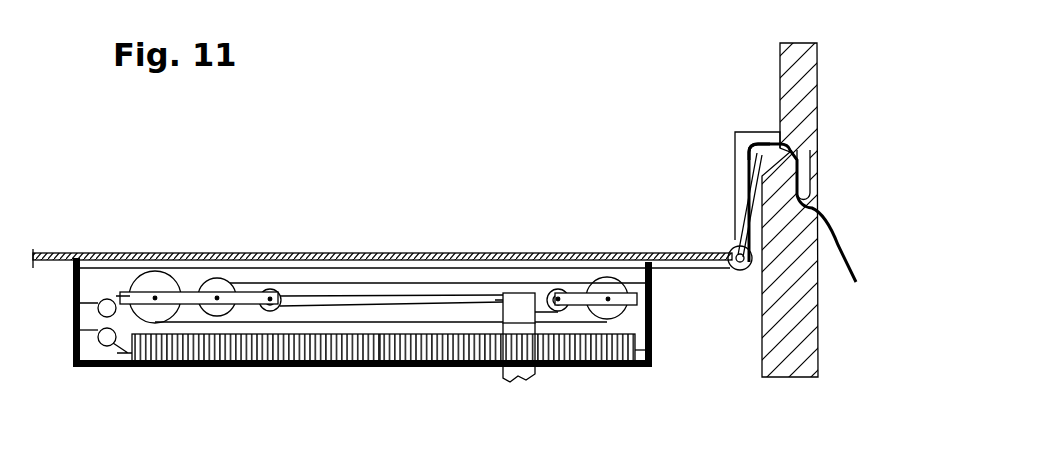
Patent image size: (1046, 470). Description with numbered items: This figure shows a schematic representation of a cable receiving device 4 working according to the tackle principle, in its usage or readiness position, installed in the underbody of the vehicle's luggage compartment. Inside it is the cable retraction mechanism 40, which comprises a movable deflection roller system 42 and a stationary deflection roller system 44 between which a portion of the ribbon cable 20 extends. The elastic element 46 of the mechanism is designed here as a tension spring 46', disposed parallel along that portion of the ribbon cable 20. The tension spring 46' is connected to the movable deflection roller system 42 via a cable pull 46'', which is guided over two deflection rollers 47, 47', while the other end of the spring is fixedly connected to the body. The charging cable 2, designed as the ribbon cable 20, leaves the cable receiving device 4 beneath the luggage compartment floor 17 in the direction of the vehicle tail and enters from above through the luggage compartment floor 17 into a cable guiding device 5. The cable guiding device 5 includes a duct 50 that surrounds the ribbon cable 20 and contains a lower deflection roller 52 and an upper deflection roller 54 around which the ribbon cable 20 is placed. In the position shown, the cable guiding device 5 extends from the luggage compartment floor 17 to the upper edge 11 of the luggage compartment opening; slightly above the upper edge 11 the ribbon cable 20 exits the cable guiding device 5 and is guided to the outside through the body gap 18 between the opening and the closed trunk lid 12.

The charging cable 2 is at (690, 278).
The cable receiving device 4 is at (89, 375).
The cable guiding device 5 is at (728, 128).
The upper edge 11 is at (790, 153).
The trunk lid 12 is at (798, 92).
The luggage compartment floor 17 is at (332, 253).
The body gap 18 is at (826, 202).
The ribbon cable 20 is at (423, 260).
The cable retraction mechanism 40 is at (123, 287).
The movable deflection roller system 42 is at (195, 287).
The stationary deflection roller system 44 is at (580, 283).
The elastic element 46 is at (388, 390).
The tension spring 46' is at (418, 390).
The cable pull 46'' is at (54, 358).
The deflection roller 47 is at (125, 383).
The deflection roller 47' is at (70, 298).
The duct 50 is at (740, 147).
The lower deflection roller 52 is at (728, 250).
The upper deflection roller 54 is at (773, 142).